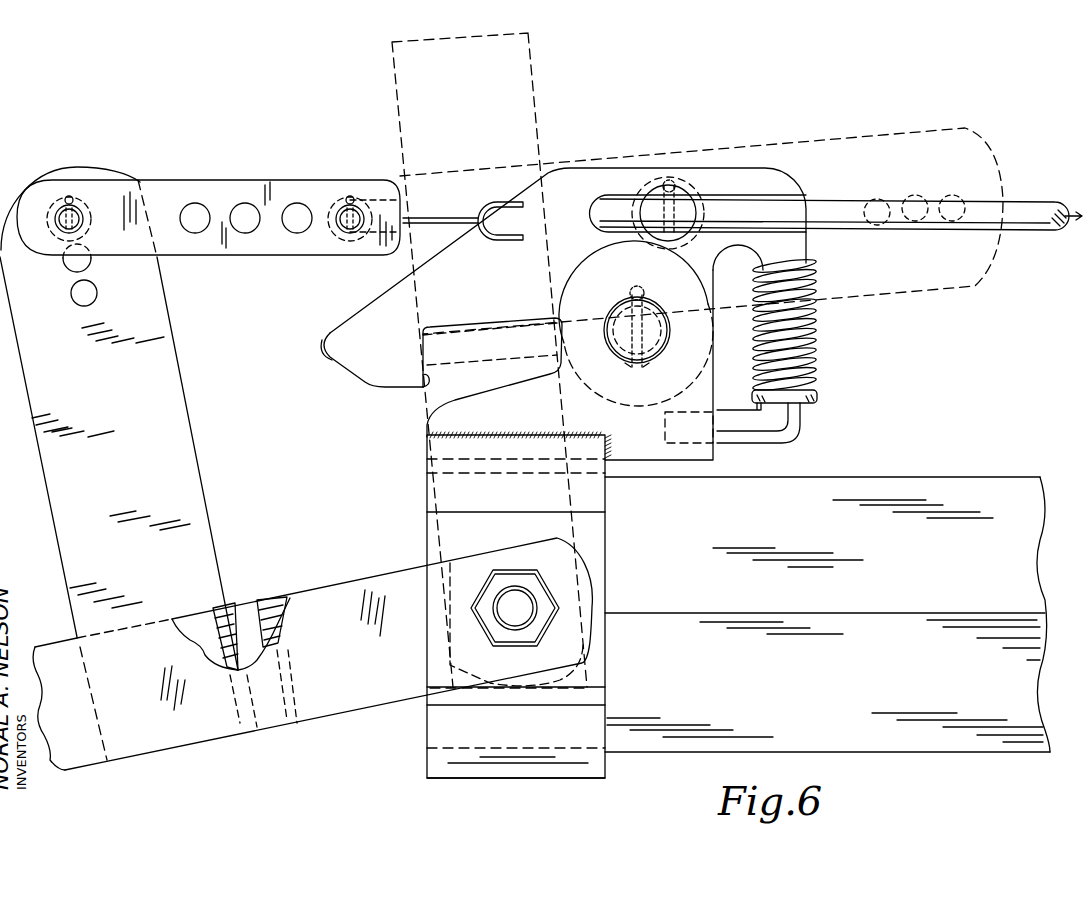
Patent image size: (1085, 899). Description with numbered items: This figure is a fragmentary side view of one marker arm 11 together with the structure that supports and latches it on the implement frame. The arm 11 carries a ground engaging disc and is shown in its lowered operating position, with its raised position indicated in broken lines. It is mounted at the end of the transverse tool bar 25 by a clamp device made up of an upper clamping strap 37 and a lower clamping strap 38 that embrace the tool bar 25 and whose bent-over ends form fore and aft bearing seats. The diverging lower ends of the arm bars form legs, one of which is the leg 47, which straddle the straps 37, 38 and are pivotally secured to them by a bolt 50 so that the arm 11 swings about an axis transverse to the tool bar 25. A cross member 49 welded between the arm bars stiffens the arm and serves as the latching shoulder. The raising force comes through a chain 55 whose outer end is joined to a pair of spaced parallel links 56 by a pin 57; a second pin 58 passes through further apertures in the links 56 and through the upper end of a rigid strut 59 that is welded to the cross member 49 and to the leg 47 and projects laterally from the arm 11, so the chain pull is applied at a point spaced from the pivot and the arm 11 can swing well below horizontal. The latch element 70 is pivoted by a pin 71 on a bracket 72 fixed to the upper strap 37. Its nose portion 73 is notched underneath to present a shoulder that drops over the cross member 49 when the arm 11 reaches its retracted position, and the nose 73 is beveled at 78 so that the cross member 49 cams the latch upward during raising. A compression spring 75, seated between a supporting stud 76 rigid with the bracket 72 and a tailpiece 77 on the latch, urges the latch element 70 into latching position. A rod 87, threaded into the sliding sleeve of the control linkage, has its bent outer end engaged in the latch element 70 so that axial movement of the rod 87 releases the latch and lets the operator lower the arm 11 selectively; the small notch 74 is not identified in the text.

The marker arm 11 is at (540, 65).
The tool bar 25 is at (943, 747).
The upper clamping strap 37 is at (605, 497).
The lower clamping strap 38 is at (533, 778).
The leg 47 is at (352, 705).
The cross member 49 is at (463, 338).
The bolt 50 is at (515, 604).
The chain 55 is at (478, 206).
The link 56 is at (235, 255).
The pin 57 is at (350, 205).
The pin 58 is at (78, 213).
The strut 59 is at (187, 402).
The latch element 70 is at (600, 167).
The pin 71 is at (655, 336).
The bracket 72 is at (713, 457).
The nose portion 73 is at (382, 297).
The notch 74 is at (425, 391).
The compression spring 75 is at (820, 358).
The supporting stud 76 is at (800, 421).
The tailpiece 77 is at (806, 256).
The bevel 78 is at (335, 366).
The rod 87 is at (820, 198).